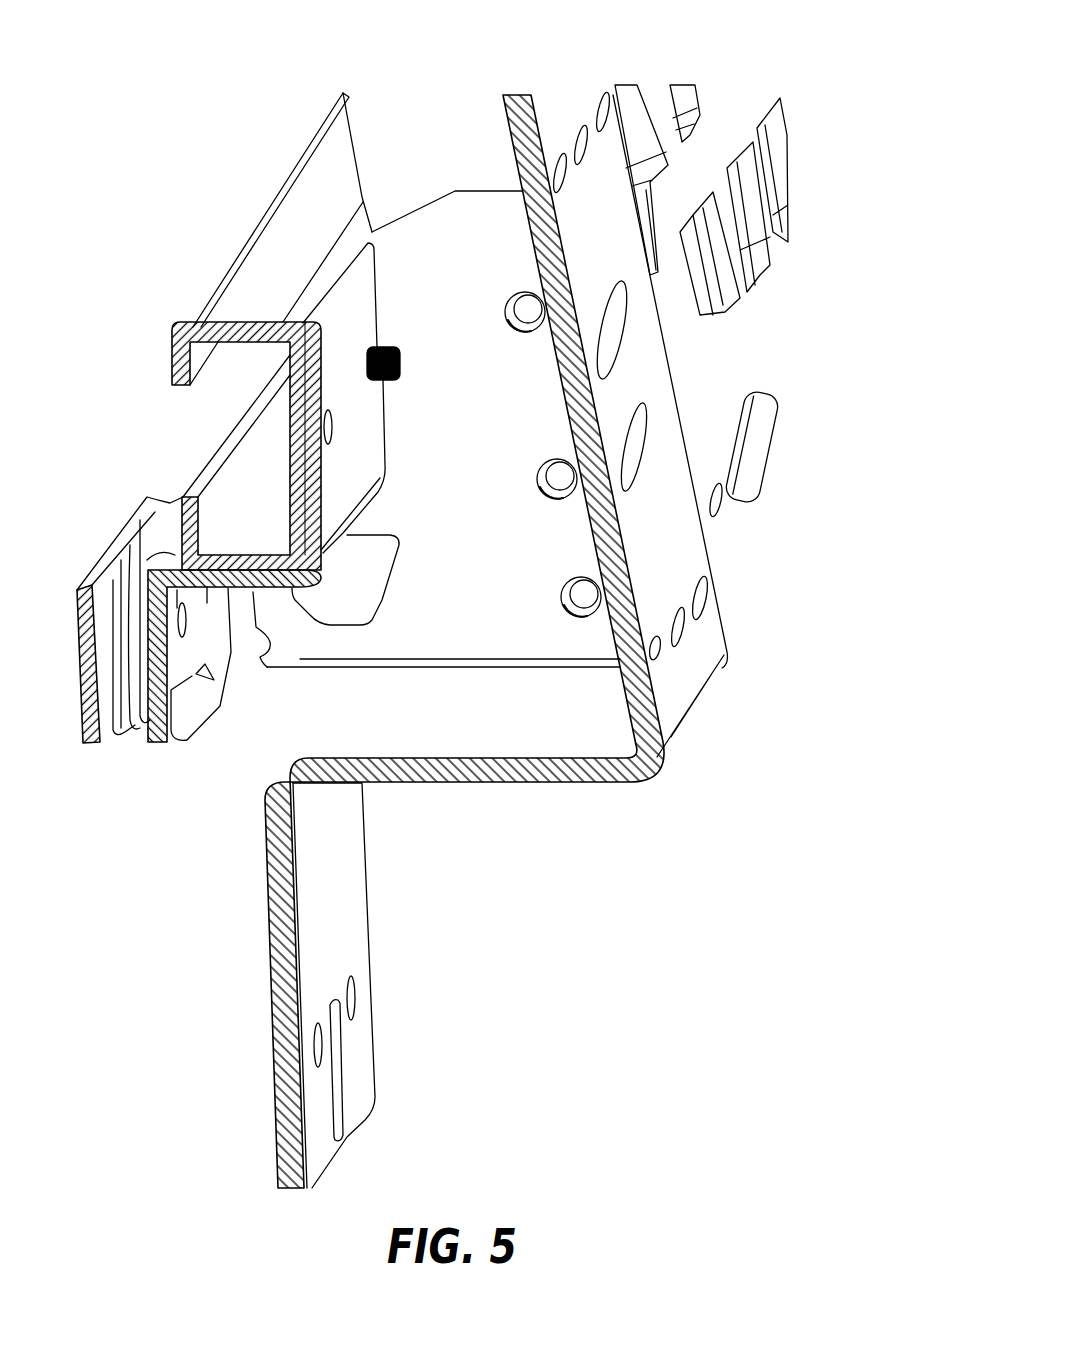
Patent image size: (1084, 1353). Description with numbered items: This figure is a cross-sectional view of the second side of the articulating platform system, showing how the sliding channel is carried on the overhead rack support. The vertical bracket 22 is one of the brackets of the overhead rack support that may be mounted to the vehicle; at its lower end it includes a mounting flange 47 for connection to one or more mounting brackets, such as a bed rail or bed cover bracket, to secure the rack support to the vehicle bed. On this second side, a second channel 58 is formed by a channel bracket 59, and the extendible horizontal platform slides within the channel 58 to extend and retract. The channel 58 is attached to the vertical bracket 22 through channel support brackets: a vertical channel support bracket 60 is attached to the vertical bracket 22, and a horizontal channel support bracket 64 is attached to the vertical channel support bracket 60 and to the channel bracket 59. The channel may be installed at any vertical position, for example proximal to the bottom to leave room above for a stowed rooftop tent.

The vertical bracket 22 is at (662, 562).
The mounting flange 47 is at (331, 883).
The second channel 58 is at (210, 428).
The channel bracket 59 is at (208, 297).
The vertical channel support bracket 60 is at (510, 427).
The horizontal channel support bracket 64 is at (267, 662).